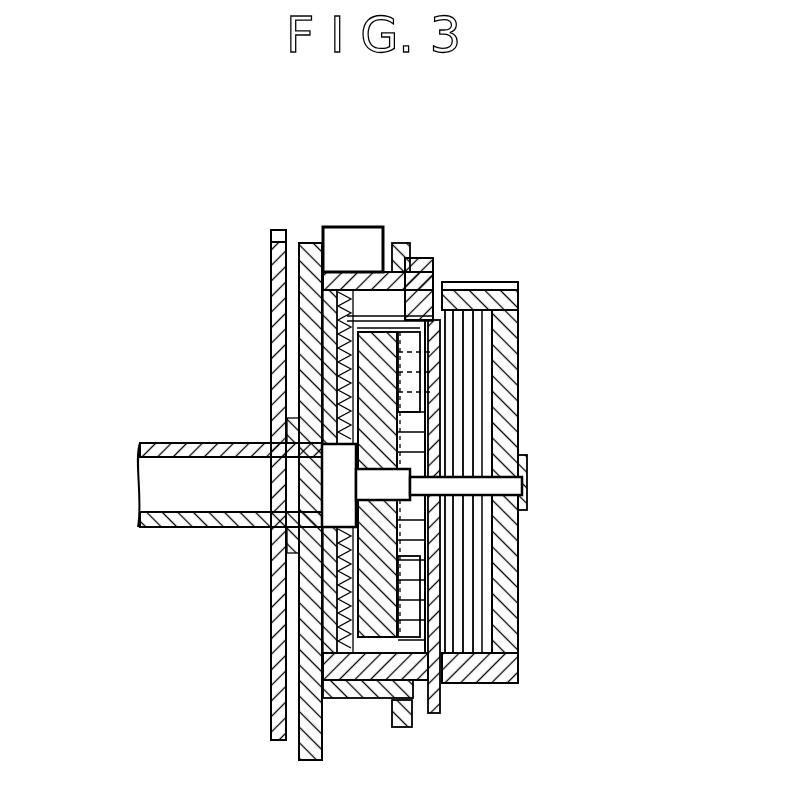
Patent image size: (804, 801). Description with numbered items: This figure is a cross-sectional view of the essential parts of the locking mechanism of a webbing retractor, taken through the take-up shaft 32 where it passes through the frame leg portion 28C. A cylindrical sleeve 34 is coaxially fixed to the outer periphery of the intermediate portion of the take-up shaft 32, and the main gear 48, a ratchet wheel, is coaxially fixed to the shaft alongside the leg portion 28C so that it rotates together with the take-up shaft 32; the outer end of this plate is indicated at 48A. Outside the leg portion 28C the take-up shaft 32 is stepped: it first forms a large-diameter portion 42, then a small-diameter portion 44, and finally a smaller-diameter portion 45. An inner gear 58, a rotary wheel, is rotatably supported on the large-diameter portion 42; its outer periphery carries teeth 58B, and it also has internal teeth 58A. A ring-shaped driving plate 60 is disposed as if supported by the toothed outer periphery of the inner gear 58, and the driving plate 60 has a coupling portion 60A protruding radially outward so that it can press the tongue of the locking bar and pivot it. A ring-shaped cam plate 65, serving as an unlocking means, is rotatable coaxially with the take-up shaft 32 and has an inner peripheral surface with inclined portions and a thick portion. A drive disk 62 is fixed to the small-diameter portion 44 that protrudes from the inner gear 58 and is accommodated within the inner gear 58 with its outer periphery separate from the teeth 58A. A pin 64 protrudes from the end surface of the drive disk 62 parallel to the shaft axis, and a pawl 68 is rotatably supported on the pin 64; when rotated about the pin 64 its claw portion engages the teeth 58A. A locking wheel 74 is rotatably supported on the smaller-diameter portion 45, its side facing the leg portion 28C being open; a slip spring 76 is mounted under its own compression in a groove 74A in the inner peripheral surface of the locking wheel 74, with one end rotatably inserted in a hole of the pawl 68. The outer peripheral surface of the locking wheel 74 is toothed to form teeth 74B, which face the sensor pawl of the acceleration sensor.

The leg portion 28C is at (322, 245).
The take-up shaft 32 is at (133, 460).
The sleeve 34 is at (212, 446).
The large-diameter portion 42 is at (378, 560).
The small-diameter portion 44 is at (405, 468).
The smaller-diameter portion 45 is at (522, 481).
The main gear 48 is at (270, 290).
The plate end 48A is at (280, 230).
The inner gear 58 is at (443, 268).
The teeth 58A is at (455, 653).
The teeth 58B is at (385, 720).
The driving plate 60 is at (395, 232).
The coupling portion 60A is at (360, 245).
The drive disk 62 is at (425, 618).
The pin 64 is at (400, 382).
The cam plate 65 is at (398, 242).
The pawl 68 is at (445, 292).
The locking wheel 74 is at (522, 308).
The groove 74A is at (497, 282).
The teeth 74B is at (507, 282).
The slip spring 76 is at (476, 370).